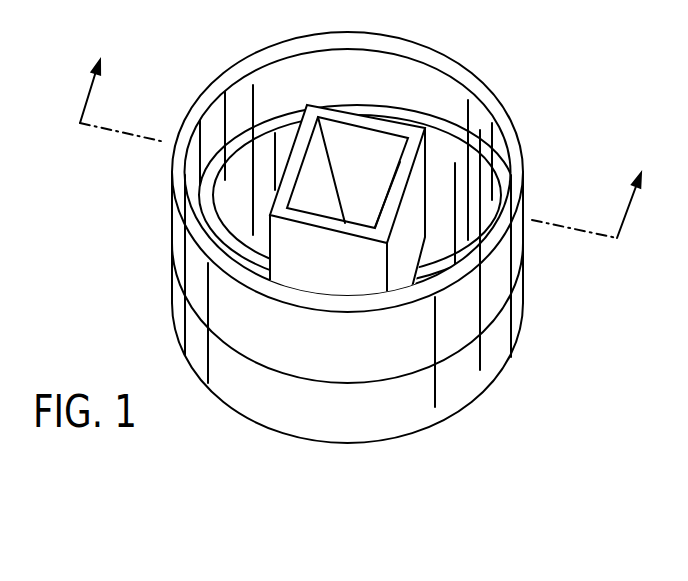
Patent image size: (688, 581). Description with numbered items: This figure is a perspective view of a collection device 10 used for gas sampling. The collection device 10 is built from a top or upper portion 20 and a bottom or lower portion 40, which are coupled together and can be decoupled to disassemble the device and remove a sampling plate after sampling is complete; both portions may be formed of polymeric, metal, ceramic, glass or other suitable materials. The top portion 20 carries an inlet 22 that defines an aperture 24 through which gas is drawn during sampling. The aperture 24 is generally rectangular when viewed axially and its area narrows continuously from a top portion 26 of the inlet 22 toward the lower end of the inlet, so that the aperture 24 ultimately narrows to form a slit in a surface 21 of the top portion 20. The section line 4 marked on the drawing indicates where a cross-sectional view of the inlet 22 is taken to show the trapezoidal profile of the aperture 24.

The collection device 10 is at (366, 271).
The top portion 20 is at (497, 259).
The surface 21 is at (257, 195).
The inlet 22 is at (418, 185).
The aperture 24 is at (370, 158).
The top portion of inlet 26 is at (297, 157).
The bottom portion 40 is at (463, 383).
The section line 4- 4 is at (366, 135).